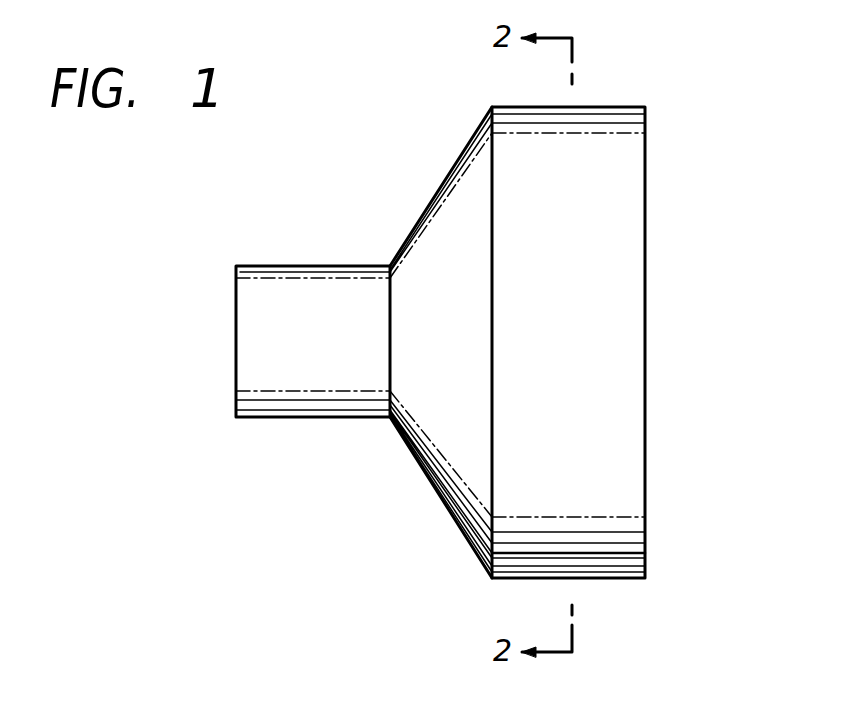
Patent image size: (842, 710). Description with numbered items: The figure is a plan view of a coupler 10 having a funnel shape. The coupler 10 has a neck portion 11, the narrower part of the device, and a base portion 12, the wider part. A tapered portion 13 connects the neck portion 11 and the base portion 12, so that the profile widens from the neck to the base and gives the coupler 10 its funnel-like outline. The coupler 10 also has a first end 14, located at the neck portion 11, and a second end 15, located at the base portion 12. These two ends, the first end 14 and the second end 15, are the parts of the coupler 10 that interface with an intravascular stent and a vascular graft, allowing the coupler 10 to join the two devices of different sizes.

The coupler 10 is at (388, 167).
The neck portion 11 is at (270, 419).
The base portion 12 is at (622, 580).
The tapered portion 13 is at (435, 490).
The first end 14 is at (236, 305).
The second end 15 is at (646, 270).